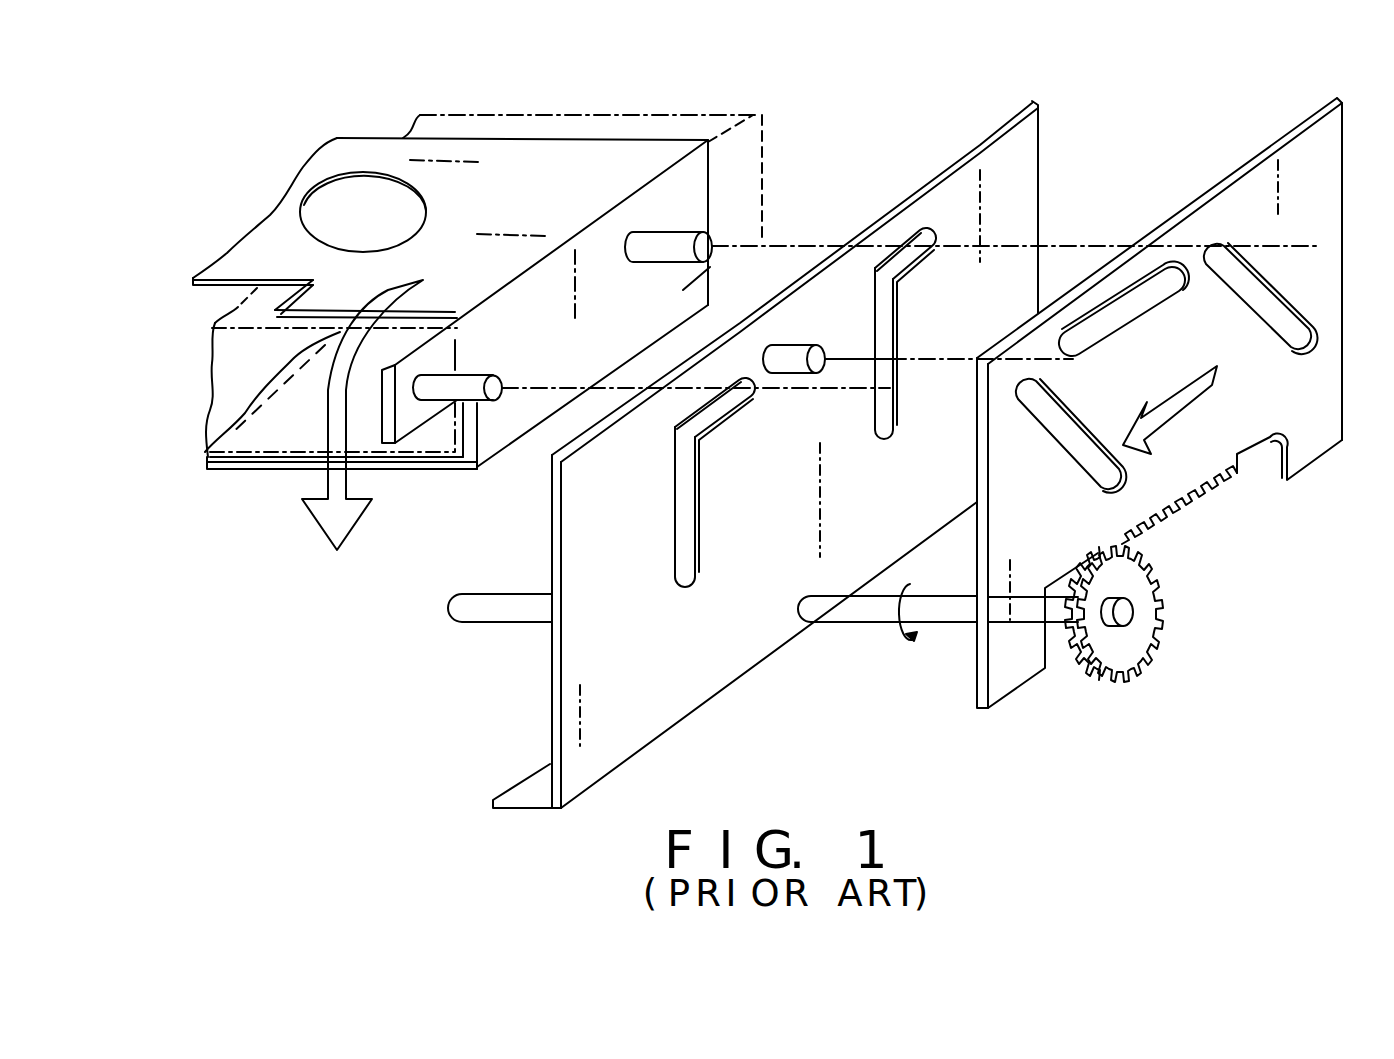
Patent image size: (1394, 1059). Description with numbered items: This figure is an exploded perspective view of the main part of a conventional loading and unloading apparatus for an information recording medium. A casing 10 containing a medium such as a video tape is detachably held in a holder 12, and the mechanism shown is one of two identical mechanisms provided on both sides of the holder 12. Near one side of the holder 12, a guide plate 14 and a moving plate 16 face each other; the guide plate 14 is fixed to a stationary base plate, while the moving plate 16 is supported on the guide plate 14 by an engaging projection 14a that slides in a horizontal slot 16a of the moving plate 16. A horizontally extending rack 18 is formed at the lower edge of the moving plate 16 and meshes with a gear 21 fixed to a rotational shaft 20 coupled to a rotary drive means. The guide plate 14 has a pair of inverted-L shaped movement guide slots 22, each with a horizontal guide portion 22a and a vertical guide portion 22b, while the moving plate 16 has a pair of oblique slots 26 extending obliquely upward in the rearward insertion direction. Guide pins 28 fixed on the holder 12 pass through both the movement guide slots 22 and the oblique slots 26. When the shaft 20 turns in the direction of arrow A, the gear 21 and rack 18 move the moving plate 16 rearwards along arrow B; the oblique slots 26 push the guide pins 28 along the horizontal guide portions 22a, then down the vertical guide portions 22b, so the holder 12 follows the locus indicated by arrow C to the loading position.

The casing 10 is at (707, 115).
The holder 12 is at (537, 160).
The guide plate 14 is at (596, 742).
The engaging projection 14a is at (785, 375).
The moving plate 16 is at (1007, 668).
The horizontal slot 16a is at (1150, 303).
The rack 18 is at (1197, 496).
The rotational shaft 20 is at (825, 625).
The gear 21 is at (1088, 667).
The movement guide slots 22 is at (877, 260).
The horizontal guide portion 22a is at (908, 253).
The vertical guide portion 22b is at (897, 337).
The oblique slots 26 is at (1231, 262).
The guide pins 28 is at (688, 218).
The arrow A is at (914, 630).
The arrow B is at (1185, 407).
The arrow C is at (423, 280).